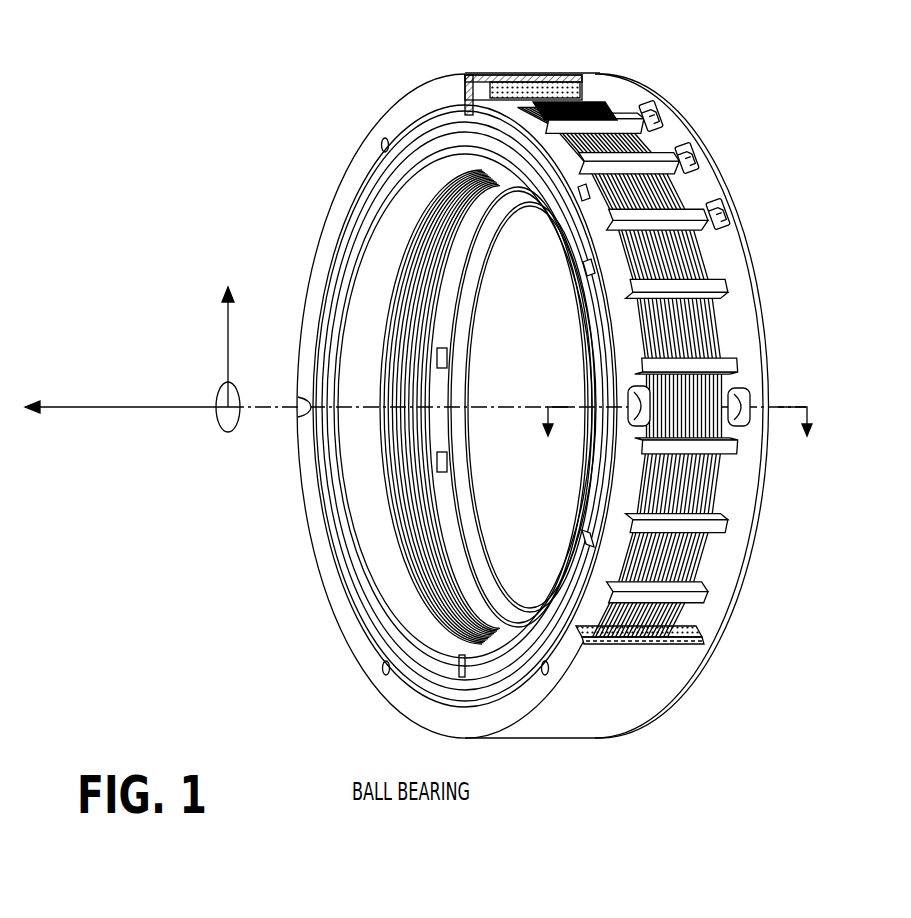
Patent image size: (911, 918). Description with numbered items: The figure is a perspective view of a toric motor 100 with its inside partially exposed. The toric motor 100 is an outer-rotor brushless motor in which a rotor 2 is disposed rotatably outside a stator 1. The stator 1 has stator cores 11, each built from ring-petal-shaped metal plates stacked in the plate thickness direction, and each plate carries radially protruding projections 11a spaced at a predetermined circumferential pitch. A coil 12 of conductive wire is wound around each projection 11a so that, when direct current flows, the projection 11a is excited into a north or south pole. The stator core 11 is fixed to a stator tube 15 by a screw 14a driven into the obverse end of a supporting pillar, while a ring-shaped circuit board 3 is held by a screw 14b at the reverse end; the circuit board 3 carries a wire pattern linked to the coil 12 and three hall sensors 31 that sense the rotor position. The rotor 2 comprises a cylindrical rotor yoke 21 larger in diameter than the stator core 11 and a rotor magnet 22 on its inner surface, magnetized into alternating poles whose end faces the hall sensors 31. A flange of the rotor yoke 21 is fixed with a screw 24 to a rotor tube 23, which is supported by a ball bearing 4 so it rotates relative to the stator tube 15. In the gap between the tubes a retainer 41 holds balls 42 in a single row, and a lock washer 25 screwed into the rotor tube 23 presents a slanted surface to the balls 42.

The toric motor 100 is at (297, 608).
The stator 1 is at (736, 664).
The rotor 2 is at (570, 750).
The circuit board 3 is at (740, 244).
The ball bearing 4 is at (551, 563).
The stator core 11 is at (600, 106).
The projection 11a is at (722, 505).
The coil 12 is at (510, 80).
The screw 14a is at (632, 400).
The screw 14b is at (746, 404).
The stator tube 15 is at (370, 268).
The rotor yoke 21 is at (534, 74).
The rotor magnet 22 is at (582, 88).
The rotor tube 23 is at (358, 177).
The screw 24 is at (300, 412).
The lock washer 25 is at (417, 147).
The hall sensor 31 is at (718, 200).
The retainer 41 is at (468, 118).
The ball 42 is at (530, 182).